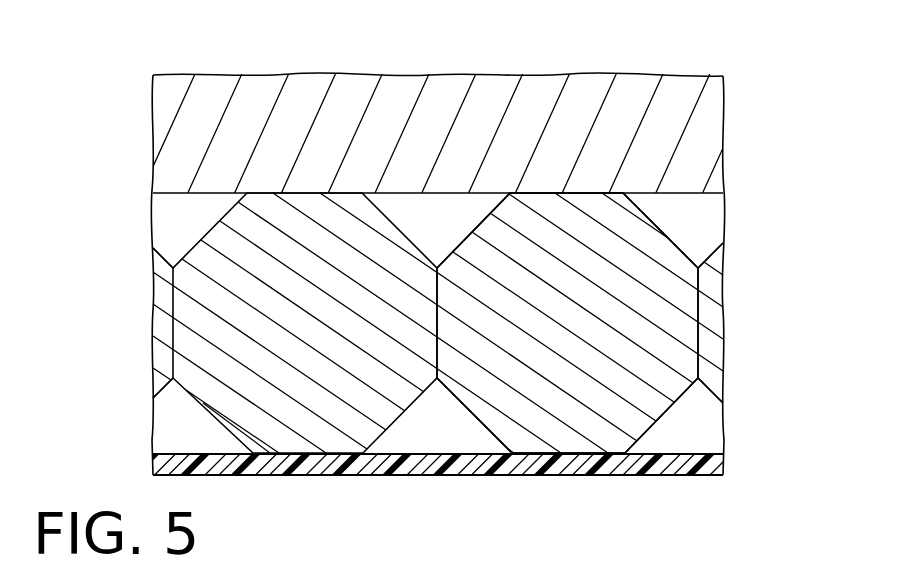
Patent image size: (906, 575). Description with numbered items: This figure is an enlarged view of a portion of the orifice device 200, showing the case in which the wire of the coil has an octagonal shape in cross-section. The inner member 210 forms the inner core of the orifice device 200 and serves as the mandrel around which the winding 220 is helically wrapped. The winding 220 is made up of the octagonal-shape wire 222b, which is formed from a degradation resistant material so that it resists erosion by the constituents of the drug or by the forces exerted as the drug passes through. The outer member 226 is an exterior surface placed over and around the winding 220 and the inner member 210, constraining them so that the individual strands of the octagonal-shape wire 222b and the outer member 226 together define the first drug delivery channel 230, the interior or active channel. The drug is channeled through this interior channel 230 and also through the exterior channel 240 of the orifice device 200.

The orifice device 200 is at (433, 37).
The inner member 210 is at (178, 112).
The winding 220 is at (305, 475).
The octagonal-shape wire 222b is at (668, 255).
The outer member 226 is at (525, 475).
The first drug delivery channel 230 is at (178, 241).
The exterior channel 240 is at (455, 437).